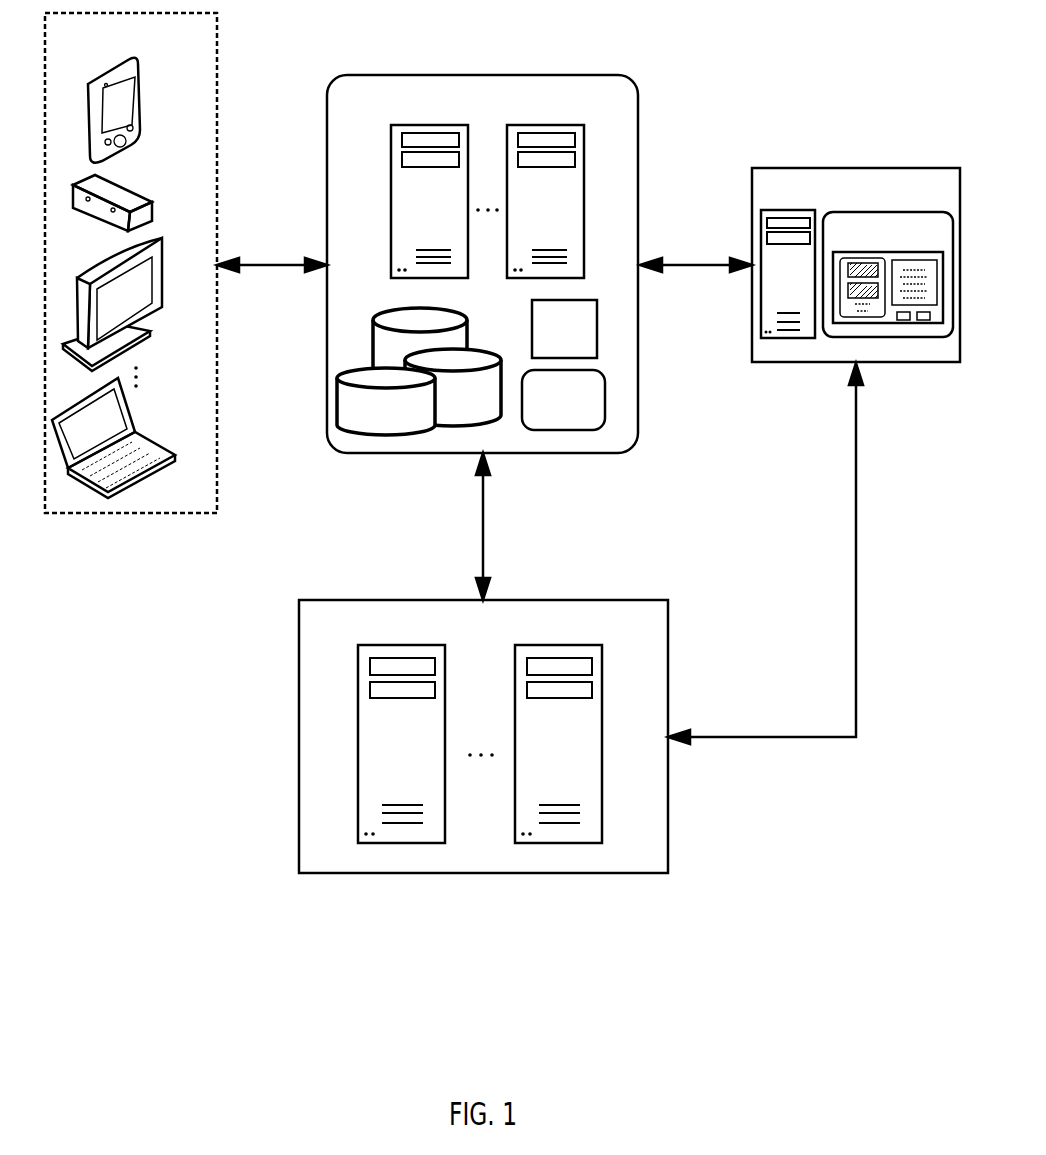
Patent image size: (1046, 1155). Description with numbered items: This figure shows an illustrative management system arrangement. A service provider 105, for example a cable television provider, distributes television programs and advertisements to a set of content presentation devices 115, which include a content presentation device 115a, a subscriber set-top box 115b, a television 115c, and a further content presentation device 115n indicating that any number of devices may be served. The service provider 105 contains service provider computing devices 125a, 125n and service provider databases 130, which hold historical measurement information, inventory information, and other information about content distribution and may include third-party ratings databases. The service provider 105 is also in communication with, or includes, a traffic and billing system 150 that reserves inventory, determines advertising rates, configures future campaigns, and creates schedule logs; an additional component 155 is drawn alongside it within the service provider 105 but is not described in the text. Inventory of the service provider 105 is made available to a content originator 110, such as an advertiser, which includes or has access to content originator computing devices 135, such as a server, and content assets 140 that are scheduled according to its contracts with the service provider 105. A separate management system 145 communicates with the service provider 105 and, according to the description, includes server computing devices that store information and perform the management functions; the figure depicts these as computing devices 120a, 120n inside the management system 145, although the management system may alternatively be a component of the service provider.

The service provider 105 is at (468, 107).
The content originator 110 is at (842, 200).
The content presentation devices 115 is at (115, 46).
The content presentation device 115a is at (140, 108).
The subscriber set-top box 115b is at (148, 192).
The television 115c is at (165, 265).
The content presentation device 115n is at (148, 433).
The content server 120a is at (381, 757).
The content server 120n is at (542, 757).
The service provider computing device 125a is at (410, 220).
The service provider computing device 125n is at (525, 220).
The service provider databases 130 is at (373, 418).
The content originator computing devices 135 is at (772, 289).
The content assets 140 is at (873, 243).
The management system 145 is at (468, 632).
The traffic and billing system 150 is at (550, 341).
The processing module 155 is at (550, 413).